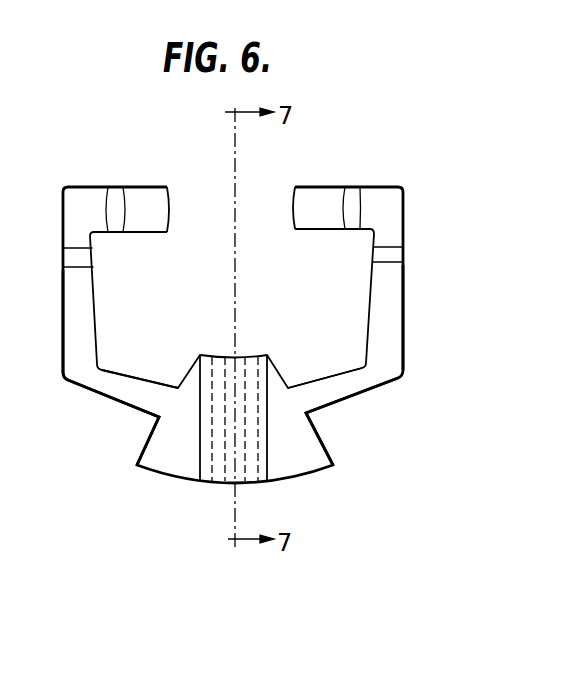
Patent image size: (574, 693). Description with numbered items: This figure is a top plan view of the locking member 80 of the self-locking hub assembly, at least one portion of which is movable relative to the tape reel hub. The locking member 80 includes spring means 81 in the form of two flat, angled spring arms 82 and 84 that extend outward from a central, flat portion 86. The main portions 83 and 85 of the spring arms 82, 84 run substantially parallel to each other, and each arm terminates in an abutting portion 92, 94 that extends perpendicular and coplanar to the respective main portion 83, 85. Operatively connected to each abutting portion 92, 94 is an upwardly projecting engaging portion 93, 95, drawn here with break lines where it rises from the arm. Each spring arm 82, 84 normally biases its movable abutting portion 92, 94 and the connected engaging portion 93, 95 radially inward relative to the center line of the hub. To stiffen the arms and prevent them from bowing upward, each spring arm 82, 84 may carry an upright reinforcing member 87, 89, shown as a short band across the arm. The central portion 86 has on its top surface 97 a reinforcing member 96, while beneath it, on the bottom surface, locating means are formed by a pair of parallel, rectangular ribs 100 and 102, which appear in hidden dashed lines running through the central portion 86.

The locking member 80 is at (444, 188).
The spring means 81 is at (95, 416).
The spring arm 82 is at (320, 380).
The main portion of spring arm 83 is at (403, 323).
The spring arm 84 is at (135, 386).
The main portion of spring arm 85 is at (67, 300).
The central flat portion 86 is at (296, 424).
The reinforcing member 87 is at (405, 252).
The reinforcing member 89 is at (69, 256).
The abutting portion 92 is at (297, 212).
The engaging portion 93 is at (352, 200).
The abutting portion 94 is at (157, 207).
The engaging portion 95 is at (113, 198).
The reinforcing member 96 is at (205, 475).
The top surface 97 is at (292, 467).
The rib 100 is at (251, 355).
The rib 102 is at (219, 355).